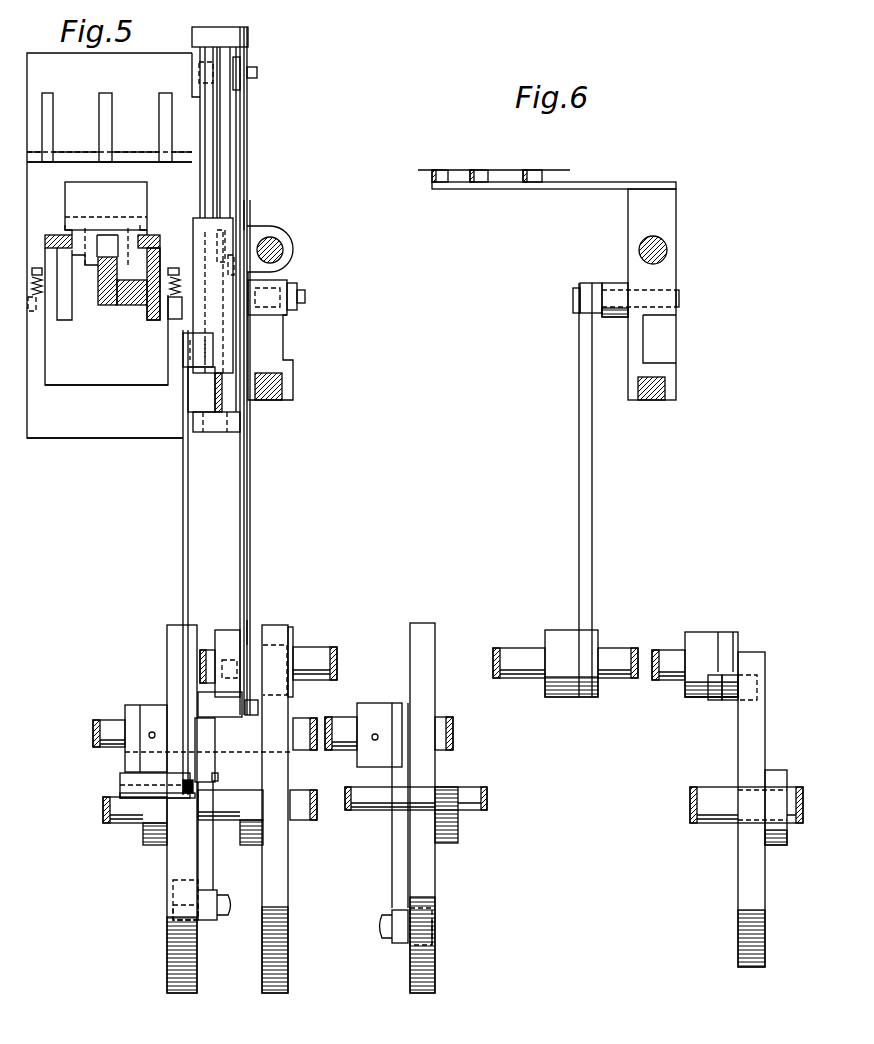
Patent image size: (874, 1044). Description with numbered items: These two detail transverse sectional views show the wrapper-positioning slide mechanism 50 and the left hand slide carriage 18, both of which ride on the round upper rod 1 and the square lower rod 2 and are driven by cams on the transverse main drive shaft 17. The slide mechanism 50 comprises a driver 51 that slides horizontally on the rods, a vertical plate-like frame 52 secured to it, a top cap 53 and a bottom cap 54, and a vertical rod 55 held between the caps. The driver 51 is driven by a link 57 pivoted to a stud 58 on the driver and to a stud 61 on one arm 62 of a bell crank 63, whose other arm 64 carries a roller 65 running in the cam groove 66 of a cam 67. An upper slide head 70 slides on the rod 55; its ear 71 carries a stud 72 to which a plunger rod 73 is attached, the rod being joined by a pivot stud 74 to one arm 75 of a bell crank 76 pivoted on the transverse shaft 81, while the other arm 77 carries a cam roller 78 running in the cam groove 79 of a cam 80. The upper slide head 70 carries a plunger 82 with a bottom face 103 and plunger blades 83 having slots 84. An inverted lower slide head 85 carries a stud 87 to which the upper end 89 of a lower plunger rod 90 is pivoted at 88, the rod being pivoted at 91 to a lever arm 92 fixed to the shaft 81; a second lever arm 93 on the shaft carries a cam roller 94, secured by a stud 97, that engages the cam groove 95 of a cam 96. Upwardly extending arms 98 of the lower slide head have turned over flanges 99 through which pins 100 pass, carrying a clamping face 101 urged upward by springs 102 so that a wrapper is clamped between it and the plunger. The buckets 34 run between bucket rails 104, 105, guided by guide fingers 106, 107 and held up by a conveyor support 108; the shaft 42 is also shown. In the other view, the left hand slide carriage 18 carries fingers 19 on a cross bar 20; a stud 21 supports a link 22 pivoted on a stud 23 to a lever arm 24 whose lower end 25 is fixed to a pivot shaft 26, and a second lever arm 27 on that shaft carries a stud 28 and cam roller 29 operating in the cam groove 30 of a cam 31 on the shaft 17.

In FIG. 5, the upper rod or bar 1 is at (285, 245).
In FIG. 6, the upper rod or bar 1 is at (667, 245).
In FIG. 5, the lower rod or bar 2 is at (280, 400).
In FIG. 6, the lower rod or bar 2 is at (655, 400).
In FIG. 5, the transverse main drive shaft 17 is at (110, 825).
In FIG. 6, the transverse main drive shaft 17 is at (706, 824).
In FIG. 6, the left hand slide carriage 18 is at (677, 210).
In FIG. 6, the fingers 19 is at (440, 170).
In FIG. 6, the cross bar 20 is at (650, 182).
In FIG. 6, the stud 21 is at (686, 301).
In FIG. 6, the link 22 is at (610, 318).
In FIG. 6, the stud 23 is at (573, 300).
In FIG. 6, the lever arm 24 is at (592, 490).
In FIG. 6, the lower end of lever 25 is at (560, 630).
In FIG. 6, the pivot shaft 26 is at (510, 648).
In FIG. 6, the second lever arm 27 is at (738, 640).
In FIG. 6, the stud 28 is at (692, 698).
In FIG. 6, the cam roller 29 is at (735, 702).
In FIG. 6, the cam groove 30 is at (764, 692).
In FIG. 6, the cam 31 is at (766, 748).
In FIG. 5, the buckets 34 is at (60, 205).
In FIG. 5, the shaft 42 is at (320, 650).
In FIG. 5, the slide mechanism 50 is at (258, 218).
In FIG. 5, the driver 51 is at (283, 335).
In FIG. 5, the plate-like frame 52 is at (250, 45).
In FIG. 5, the top cap 53 is at (232, 31).
In FIG. 5, the bottom cap 54 is at (216, 433).
In FIG. 5, the vertical rod 55 is at (220, 118).
In FIG. 5, the link 57 is at (288, 285).
In FIG. 5, the stud 58 is at (306, 296).
In FIG. 5, the stud 61 is at (213, 295).
In FIG. 5, the arm of bell crank 62 is at (253, 505).
In FIG. 5, the bell crank 63 is at (258, 626).
In FIG. 5, the arm of bell crank 64 is at (250, 648).
In FIG. 5, the roller 65 is at (287, 678).
In FIG. 5, the cam groove 66 is at (294, 640).
In FIG. 5, the cam 67 is at (290, 975).
In FIG. 5, the upper slide head 70 is at (240, 182).
In FIG. 5, the ear 71 is at (240, 62).
In FIG. 5, the stud 72 is at (258, 70).
In FIG. 5, the link or plunger rod 73 is at (248, 125).
In FIG. 5, the pivot stud 74 is at (258, 707).
In FIG. 5, the arm of bell crank 75 is at (215, 738).
In FIG. 5, the bell crank 76 is at (223, 772).
In FIG. 5, the arm of bell crank 77 is at (214, 866).
In FIG. 5, the cam roller 78 is at (173, 915).
In FIG. 5, the cam groove 79 is at (166, 904).
In FIG. 5, the cam 80 is at (167, 642).
In FIG. 5, the transverse shaft 81 is at (100, 722).
In FIG. 5, the plunger 82 is at (35, 147).
In FIG. 5, the plunger blades 83 is at (37, 68).
In FIG. 5, the cut-outs or slots 84 is at (95, 122).
In FIG. 5, the lower slide head 85 is at (66, 432).
In FIG. 5, the stud 87 is at (188, 390).
In FIG. 5, the pivot 88 is at (176, 319).
In FIG. 5, the upper end of link 89 is at (183, 355).
In FIG. 5, the link or lower plunger rod 90 is at (183, 450).
In FIG. 5, the pivot 91 is at (190, 797).
In FIG. 5, the lever arm 92 is at (135, 705).
In FIG. 5, the second lever arm 93 is at (402, 760).
In FIG. 5, the cam roller 94 is at (410, 945).
In FIG. 5, the cam groove 95 is at (443, 938).
In FIG. 5, the cam 96 is at (422, 628).
In FIG. 5, the stud 97 is at (380, 940).
In FIG. 5, the upwardly extending arms 98 is at (45, 368).
In FIG. 5, the turned over flanges 99 is at (30, 310).
In FIG. 5, the pins 100 is at (32, 288).
In FIG. 5, the clamping face 101 is at (36, 267).
In FIG. 5, the springs 102 is at (40, 262).
In FIG. 5, the bottom face of plunger 103 is at (148, 163).
In FIG. 5, the bucket rail 104 is at (52, 325).
In FIG. 5, the bucket rail 105 is at (147, 302).
In FIG. 5, the guide finger 106 is at (66, 222).
In FIG. 5, the guide finger 107 is at (150, 225).
In FIG. 5, the conveyor support 108 is at (98, 285).